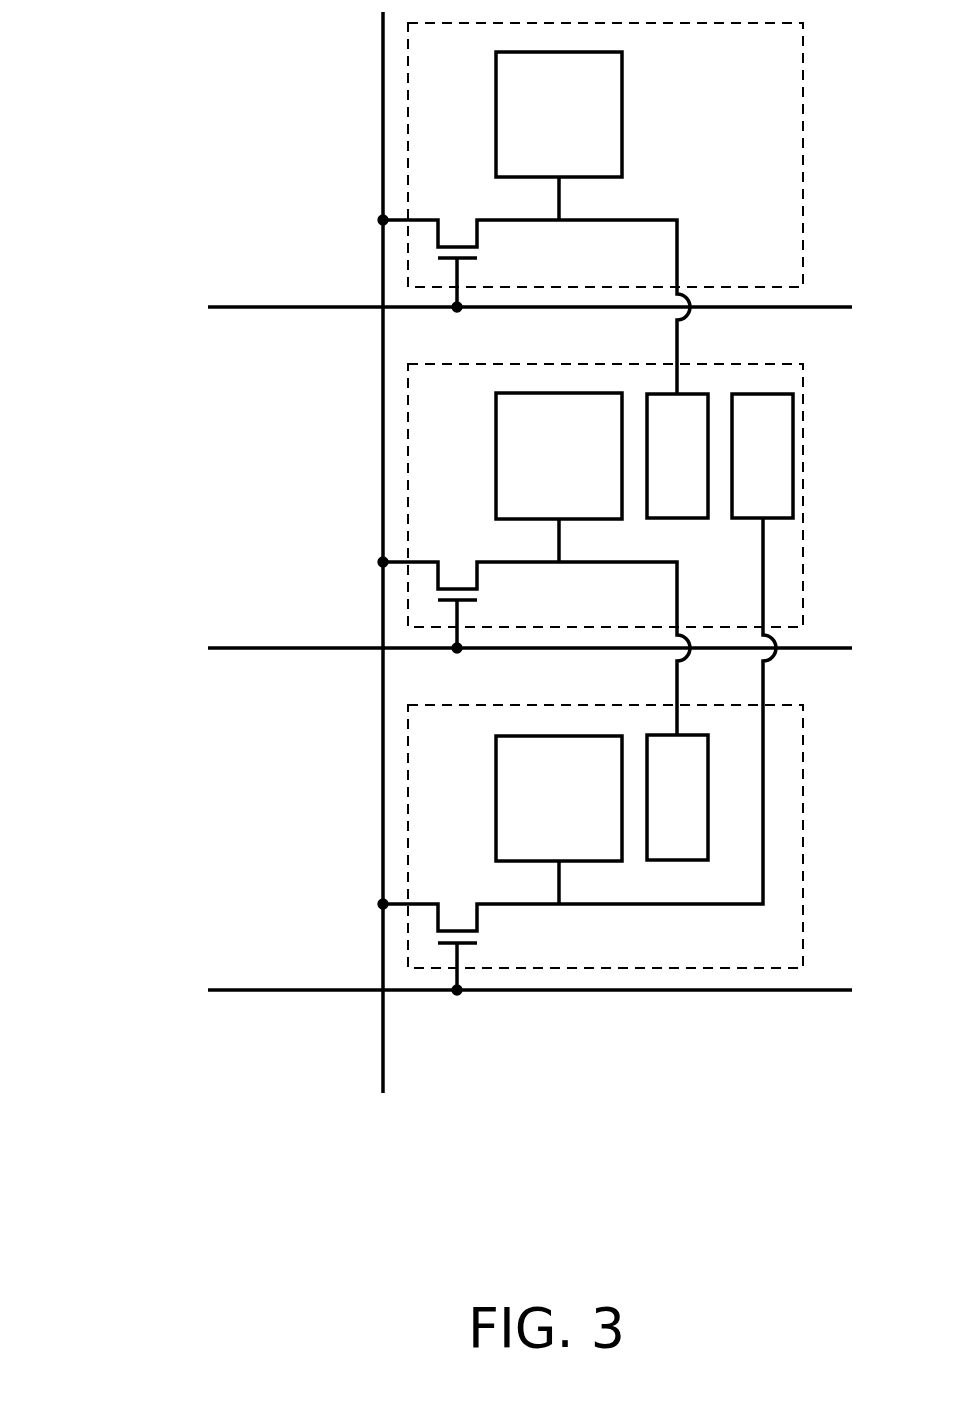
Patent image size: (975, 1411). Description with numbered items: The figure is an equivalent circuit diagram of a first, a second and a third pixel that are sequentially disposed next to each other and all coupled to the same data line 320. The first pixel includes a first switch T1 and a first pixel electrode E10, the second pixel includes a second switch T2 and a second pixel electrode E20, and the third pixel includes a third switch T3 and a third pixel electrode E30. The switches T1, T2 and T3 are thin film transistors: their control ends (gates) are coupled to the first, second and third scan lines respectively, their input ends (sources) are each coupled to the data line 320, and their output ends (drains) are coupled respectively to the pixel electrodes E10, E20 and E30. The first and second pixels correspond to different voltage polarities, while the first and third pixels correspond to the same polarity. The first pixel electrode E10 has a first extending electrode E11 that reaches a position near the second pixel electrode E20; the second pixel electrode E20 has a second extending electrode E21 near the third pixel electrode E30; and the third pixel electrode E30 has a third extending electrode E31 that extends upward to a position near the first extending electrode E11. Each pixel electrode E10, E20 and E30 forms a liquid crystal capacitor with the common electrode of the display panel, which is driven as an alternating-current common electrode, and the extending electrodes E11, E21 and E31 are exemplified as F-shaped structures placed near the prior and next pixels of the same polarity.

The data line 320 is at (383, 64).
The first switch T1 is at (534, 289).
The second switch T2 is at (534, 630).
The third switch T3 is at (577, 756).
The first pixel electrode E10 is at (527, 131).
The second pixel electrode E20 is at (527, 475).
The third pixel electrode E30 is at (527, 816).
The first extending electrode E11 is at (710, 475).
The second extending electrode E21 is at (710, 815).
The third extending electrode E31 is at (795, 475).